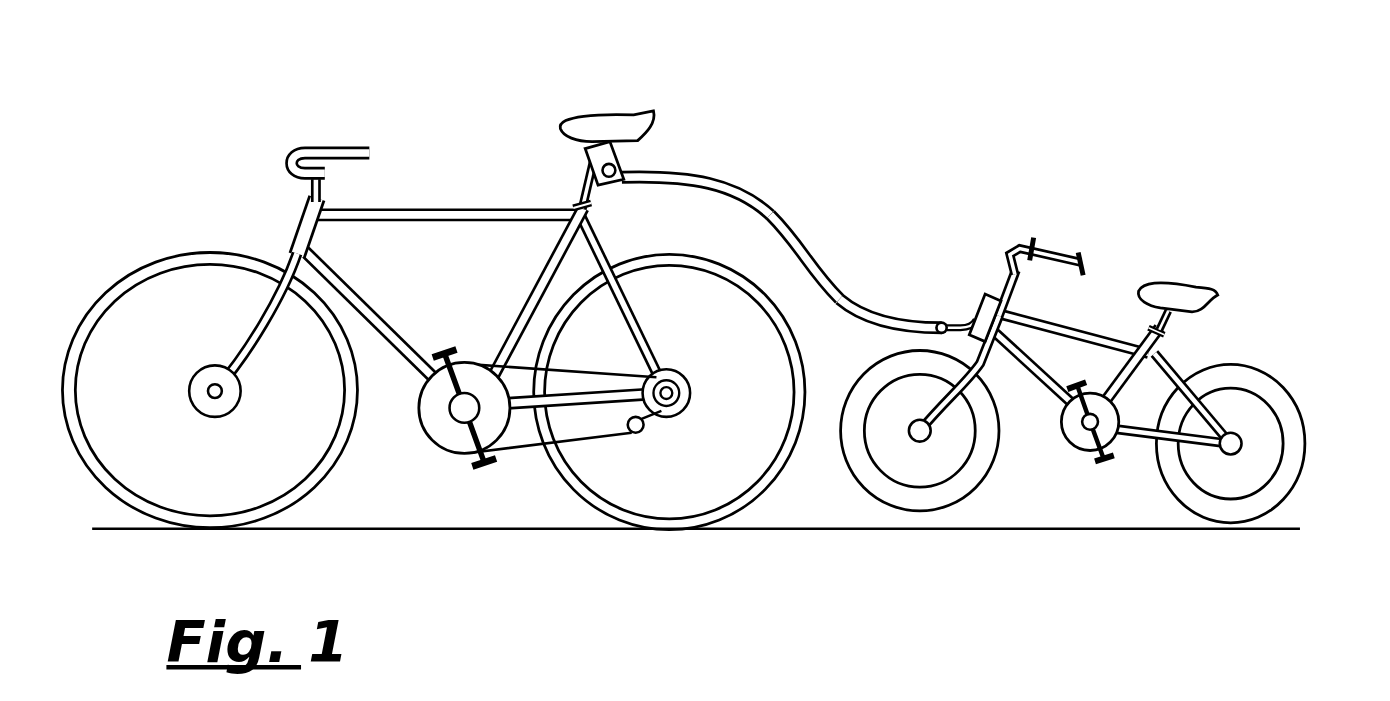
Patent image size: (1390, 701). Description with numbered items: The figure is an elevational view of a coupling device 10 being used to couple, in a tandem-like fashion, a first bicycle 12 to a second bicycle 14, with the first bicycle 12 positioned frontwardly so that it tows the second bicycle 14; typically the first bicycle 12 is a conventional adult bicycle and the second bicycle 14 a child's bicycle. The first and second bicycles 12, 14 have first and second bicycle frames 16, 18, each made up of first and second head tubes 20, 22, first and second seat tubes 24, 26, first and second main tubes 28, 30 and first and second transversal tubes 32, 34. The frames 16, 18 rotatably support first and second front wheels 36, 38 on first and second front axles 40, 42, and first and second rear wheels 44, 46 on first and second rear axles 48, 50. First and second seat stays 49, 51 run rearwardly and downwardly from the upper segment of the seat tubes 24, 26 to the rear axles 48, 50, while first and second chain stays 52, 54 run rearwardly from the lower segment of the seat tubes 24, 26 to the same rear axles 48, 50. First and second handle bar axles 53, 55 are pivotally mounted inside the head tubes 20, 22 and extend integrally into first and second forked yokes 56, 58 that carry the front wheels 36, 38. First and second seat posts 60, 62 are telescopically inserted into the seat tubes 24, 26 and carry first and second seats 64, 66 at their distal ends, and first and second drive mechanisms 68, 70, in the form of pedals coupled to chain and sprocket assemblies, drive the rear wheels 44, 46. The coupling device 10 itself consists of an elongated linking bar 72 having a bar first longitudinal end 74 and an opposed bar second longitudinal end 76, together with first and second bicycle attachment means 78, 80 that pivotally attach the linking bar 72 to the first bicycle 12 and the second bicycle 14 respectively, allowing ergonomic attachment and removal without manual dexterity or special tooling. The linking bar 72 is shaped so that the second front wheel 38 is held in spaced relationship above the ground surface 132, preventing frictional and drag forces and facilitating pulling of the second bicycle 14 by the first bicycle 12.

The coupling device 10 is at (800, 209).
The first bicycle 12 is at (402, 134).
The second bicycle 14 is at (1117, 261).
The first bicycle frame 16 is at (472, 227).
The second bicycle frame 18 is at (1088, 349).
The first head tube 20 is at (292, 216).
The second head tube 22 is at (1003, 306).
The first seat tube 24 is at (590, 208).
The second seat tube 26 is at (1162, 327).
The first main tube 28 is at (424, 208).
The second main tube 30 is at (1076, 334).
The first transversal tube 32 is at (358, 298).
The second transversal tube 34 is at (1036, 372).
The first front wheel 36 is at (76, 332).
The second front wheel 38 is at (858, 405).
The first front axle 40 is at (220, 391).
The second front axle 42 is at (931, 428).
The first rear wheel 44 is at (717, 266).
The second rear wheel 46 is at (1277, 394).
The first rear axle 48 is at (675, 388).
The first seat stay 49 is at (604, 260).
The second rear axle 50 is at (1247, 441).
The second seat stay 51 is at (1163, 358).
The first chain stay 52 is at (558, 402).
The first handle bar axle 53 is at (322, 192).
The second chain stay 54 is at (1147, 428).
The second handle bar axle 55 is at (995, 264).
The first forked yoke 56 is at (256, 312).
The second forked yoke 58 is at (969, 354).
The first seat post 60 is at (581, 182).
The second seat post 62 is at (1143, 310).
The first seat 64 is at (597, 120).
The second seat 66 is at (1185, 295).
The first drive mechanism 68 is at (446, 461).
The second drive mechanism 70 is at (1066, 459).
The linking bar 72 is at (852, 287).
The bar first longitudinal end 74 is at (668, 163).
The bar second longitudinal end 76 is at (899, 336).
The first bicycle attachment means 78 is at (622, 150).
The second bicycle attachment means 80 is at (960, 297).
The ground surface 132 is at (800, 529).